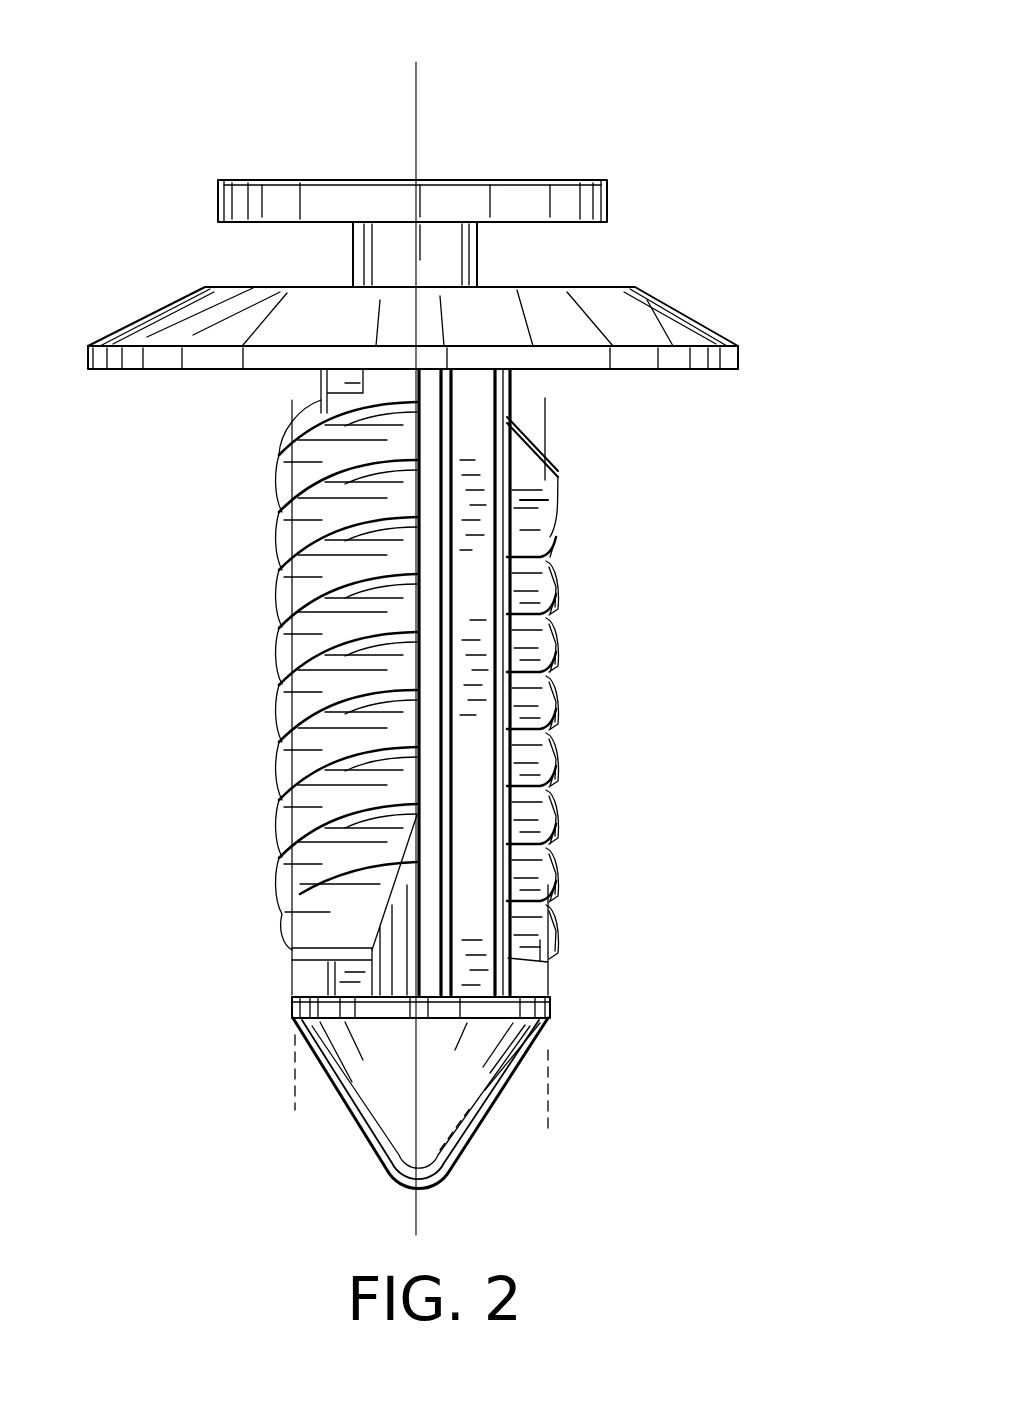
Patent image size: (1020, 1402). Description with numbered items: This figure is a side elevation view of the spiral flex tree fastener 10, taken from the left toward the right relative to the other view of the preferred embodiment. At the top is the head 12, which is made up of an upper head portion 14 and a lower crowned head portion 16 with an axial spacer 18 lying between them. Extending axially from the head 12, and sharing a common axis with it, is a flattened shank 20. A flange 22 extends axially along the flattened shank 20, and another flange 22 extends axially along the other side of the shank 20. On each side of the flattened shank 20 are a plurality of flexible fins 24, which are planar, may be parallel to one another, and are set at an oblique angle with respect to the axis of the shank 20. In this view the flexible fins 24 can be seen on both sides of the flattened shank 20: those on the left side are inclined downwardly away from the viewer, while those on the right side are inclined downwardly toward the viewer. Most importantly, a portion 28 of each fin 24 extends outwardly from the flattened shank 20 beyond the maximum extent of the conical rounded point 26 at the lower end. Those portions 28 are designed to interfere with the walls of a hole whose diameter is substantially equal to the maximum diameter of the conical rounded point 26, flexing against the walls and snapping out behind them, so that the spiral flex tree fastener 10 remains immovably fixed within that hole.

The spiral flex tree fastener 10 is at (594, 128).
The head 12 is at (716, 296).
The upper head portion 14 is at (296, 196).
The lower crowned head portion 16 is at (192, 322).
The axial spacer 18 is at (456, 262).
The flattened shank 20 is at (425, 427).
The flange 22 is at (288, 420).
The flexible fins 24 is at (278, 645).
The conical rounded point 26 is at (390, 1078).
The portion of fin 28 is at (278, 702).